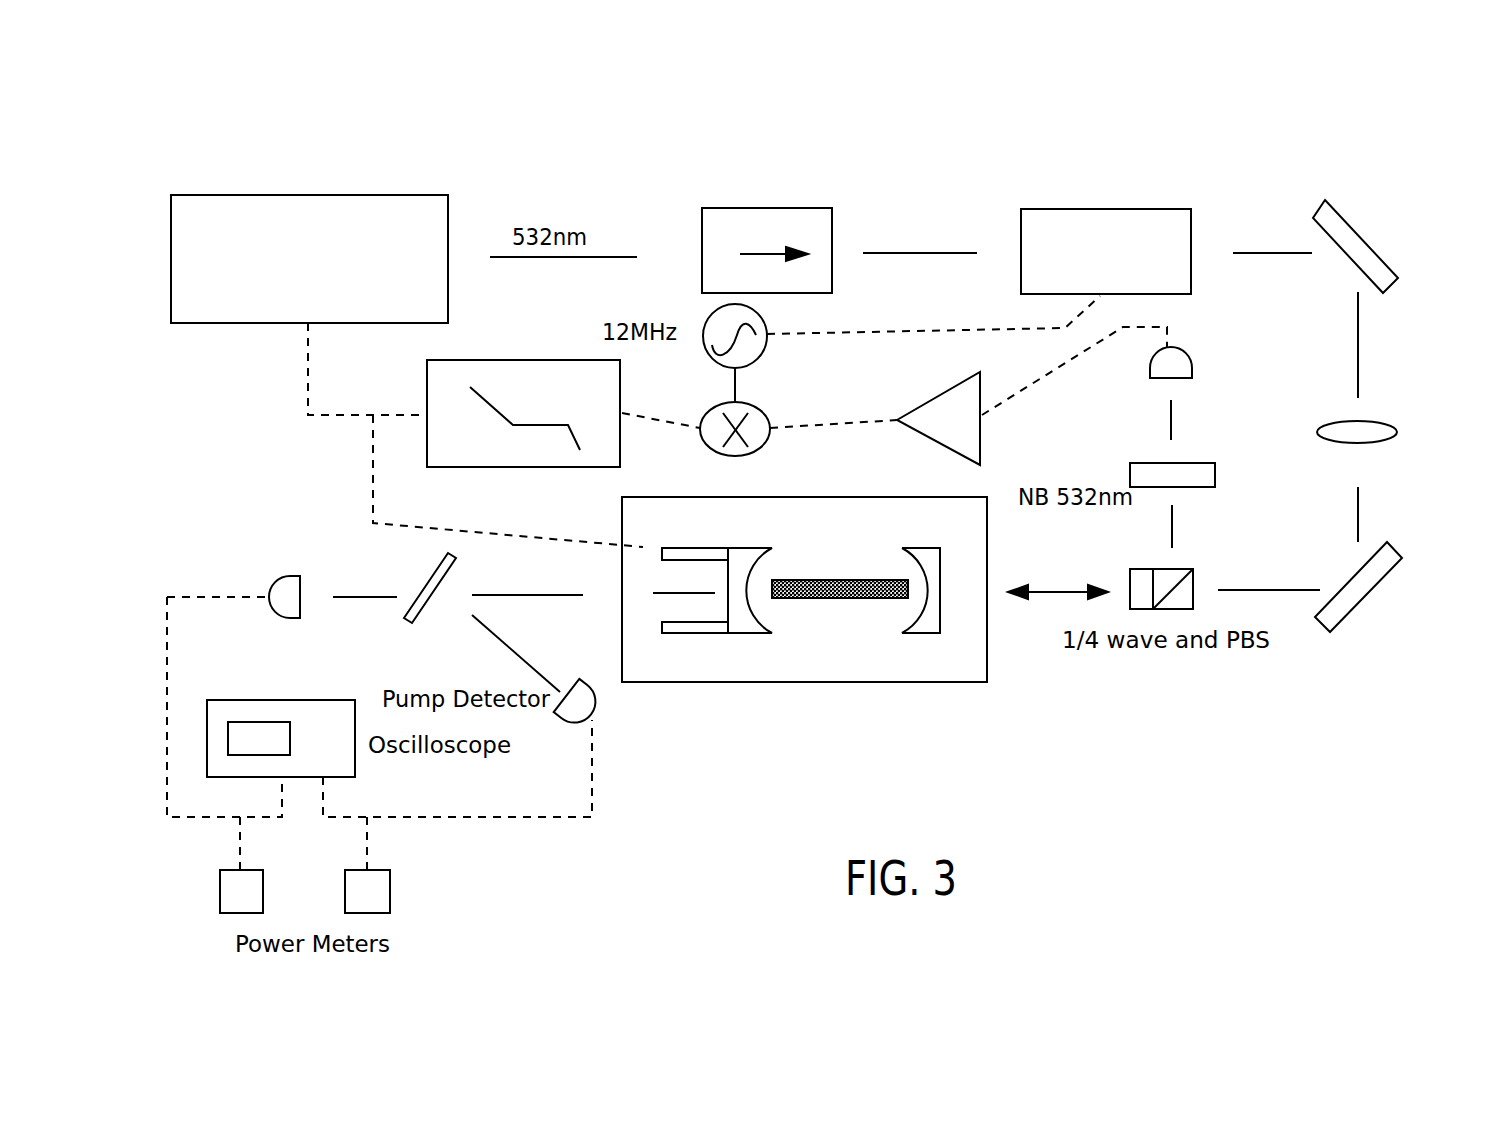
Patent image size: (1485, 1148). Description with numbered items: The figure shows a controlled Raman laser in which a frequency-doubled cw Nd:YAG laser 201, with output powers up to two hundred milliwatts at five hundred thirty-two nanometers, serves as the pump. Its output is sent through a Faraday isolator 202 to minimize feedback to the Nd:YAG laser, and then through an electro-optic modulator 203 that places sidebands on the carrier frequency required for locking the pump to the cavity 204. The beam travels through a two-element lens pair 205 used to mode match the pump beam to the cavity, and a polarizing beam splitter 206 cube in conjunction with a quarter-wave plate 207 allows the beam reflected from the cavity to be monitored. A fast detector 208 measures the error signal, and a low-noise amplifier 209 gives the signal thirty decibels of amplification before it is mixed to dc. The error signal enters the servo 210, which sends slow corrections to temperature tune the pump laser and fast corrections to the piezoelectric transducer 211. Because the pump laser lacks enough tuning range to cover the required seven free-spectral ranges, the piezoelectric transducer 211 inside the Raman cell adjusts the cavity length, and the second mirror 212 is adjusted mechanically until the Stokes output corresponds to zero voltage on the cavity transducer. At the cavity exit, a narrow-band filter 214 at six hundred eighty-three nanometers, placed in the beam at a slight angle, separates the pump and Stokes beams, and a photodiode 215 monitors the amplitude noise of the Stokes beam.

The Nd:YAG laser 201 is at (232, 195).
The Faraday isolator 202 is at (832, 230).
The electro-optic modulator 203 is at (1085, 209).
The cavity 204 is at (883, 548).
The two-element lens pair 205 is at (1375, 443).
The polarizing beam splitter 206 is at (1180, 569).
The quarter-wave plate 207 is at (1142, 569).
The fast detector 208 is at (1182, 347).
The low-noise amplifier 209 is at (947, 392).
The servo 210 is at (495, 468).
The piezoelectric transducer 211 is at (662, 627).
The second mirror 212 is at (940, 615).
The narrow-band filter 214 is at (443, 578).
The photodiode 215 is at (268, 605).